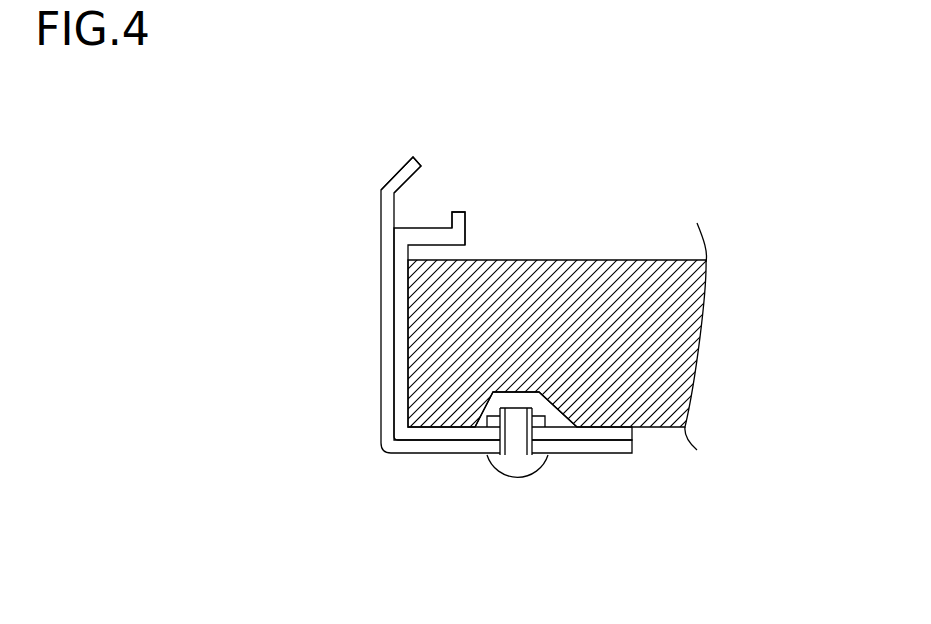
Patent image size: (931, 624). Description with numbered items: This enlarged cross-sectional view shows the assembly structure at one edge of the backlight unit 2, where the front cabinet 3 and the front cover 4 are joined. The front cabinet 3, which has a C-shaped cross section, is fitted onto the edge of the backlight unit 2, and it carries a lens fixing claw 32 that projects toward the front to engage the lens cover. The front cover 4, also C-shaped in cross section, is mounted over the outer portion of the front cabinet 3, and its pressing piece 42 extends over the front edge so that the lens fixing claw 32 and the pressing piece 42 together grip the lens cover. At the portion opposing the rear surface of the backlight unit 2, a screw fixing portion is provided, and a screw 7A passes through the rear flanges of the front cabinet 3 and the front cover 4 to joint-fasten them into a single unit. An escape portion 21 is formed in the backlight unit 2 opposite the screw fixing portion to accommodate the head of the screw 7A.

The backlight unit 2 is at (700, 322).
The escape portion 21 is at (507, 395).
The front cabinet 3 is at (400, 365).
The lens fixing claw 32 is at (463, 213).
The front cover 4 is at (382, 290).
The pressing piece 42 is at (397, 172).
The screw 7A is at (513, 467).